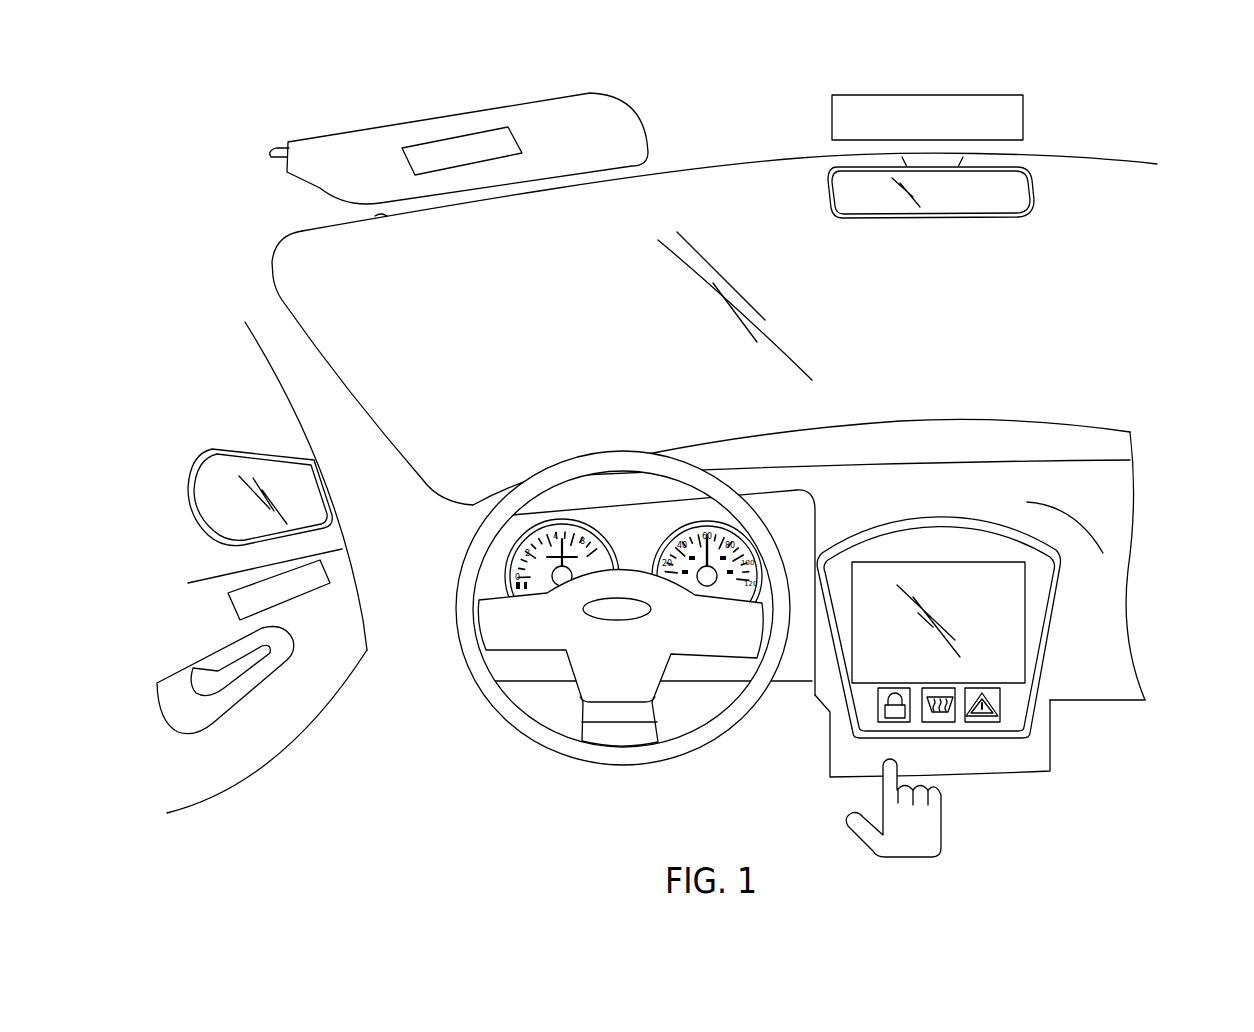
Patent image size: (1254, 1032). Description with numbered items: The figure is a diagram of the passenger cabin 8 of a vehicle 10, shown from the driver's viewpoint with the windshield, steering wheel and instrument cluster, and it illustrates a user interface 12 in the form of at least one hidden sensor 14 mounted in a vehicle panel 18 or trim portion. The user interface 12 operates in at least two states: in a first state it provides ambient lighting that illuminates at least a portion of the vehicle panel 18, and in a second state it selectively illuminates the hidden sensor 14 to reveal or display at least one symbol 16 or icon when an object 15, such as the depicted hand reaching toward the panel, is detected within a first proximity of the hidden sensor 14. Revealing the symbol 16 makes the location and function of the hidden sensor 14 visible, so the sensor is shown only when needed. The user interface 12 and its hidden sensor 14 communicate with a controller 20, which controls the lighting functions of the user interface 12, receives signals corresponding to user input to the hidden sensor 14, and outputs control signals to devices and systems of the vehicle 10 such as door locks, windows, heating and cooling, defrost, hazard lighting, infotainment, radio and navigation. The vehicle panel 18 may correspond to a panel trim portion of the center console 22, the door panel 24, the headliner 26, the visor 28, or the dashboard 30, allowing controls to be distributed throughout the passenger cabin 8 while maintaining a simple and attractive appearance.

The passenger cabin 8 is at (1070, 261).
The vehicle 10 is at (307, 94).
The user interface 12 is at (863, 702).
The hidden sensor 14 is at (1044, 730).
The object 15 is at (928, 832).
The symbol 16 is at (902, 721).
The vehicle panel 18 is at (191, 593).
The controller 20 is at (1139, 369).
The center console 22 is at (1110, 694).
The door panel 24 is at (181, 619).
The headliner 26 is at (970, 96).
The visor 28 is at (524, 100).
The dashboard 30 is at (908, 430).